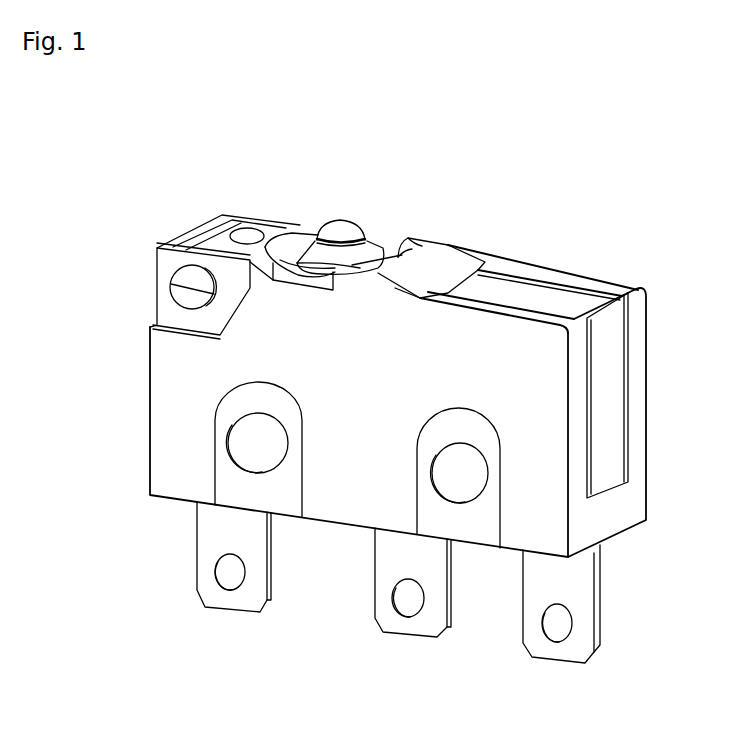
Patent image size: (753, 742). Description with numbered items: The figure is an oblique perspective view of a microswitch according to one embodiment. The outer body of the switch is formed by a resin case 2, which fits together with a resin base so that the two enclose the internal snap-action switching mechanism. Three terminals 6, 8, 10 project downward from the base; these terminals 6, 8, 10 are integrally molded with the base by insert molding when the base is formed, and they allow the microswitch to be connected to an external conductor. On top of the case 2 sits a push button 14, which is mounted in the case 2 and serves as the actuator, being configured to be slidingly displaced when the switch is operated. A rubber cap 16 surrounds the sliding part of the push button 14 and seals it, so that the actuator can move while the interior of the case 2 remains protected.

The case 2 is at (398, 386).
The terminal 6 is at (228, 612).
The terminal 8 is at (407, 638).
The terminal 10 is at (553, 664).
The push button 14 is at (340, 222).
The rubber cap 16 is at (367, 244).